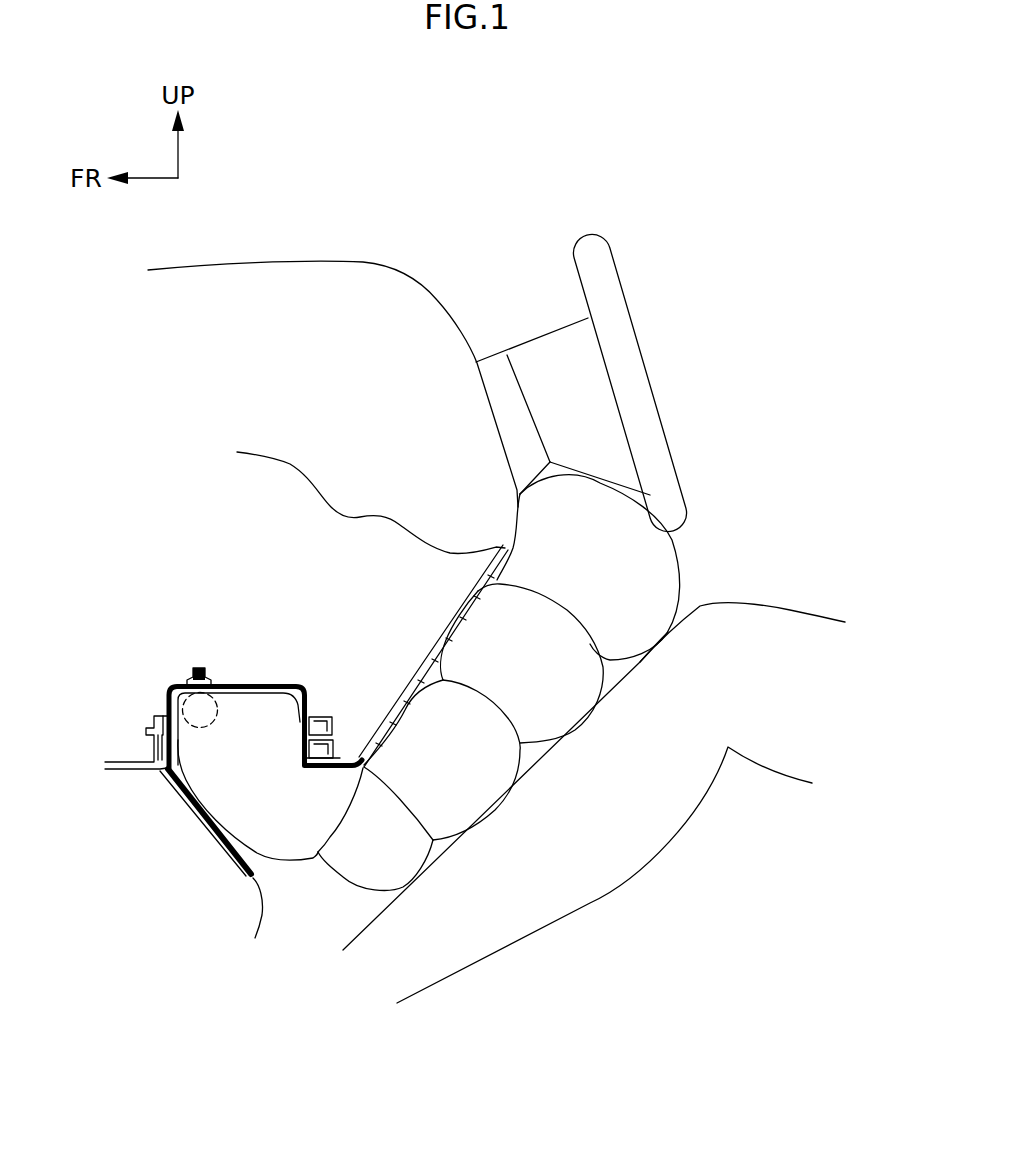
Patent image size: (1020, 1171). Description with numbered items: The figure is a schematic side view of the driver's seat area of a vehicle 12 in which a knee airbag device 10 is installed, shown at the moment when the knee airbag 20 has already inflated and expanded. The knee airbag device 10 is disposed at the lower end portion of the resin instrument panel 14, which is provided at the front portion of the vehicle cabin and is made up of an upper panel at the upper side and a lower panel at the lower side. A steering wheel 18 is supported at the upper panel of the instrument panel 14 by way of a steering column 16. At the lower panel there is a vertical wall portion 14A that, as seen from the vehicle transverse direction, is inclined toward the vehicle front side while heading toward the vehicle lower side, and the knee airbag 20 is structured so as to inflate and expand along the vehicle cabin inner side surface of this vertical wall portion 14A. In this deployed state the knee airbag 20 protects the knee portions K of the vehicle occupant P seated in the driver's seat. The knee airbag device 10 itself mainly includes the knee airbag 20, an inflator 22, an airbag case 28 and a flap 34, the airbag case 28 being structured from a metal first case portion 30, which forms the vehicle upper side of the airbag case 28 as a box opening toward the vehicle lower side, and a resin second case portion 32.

The knee airbag device 10 is at (172, 652).
The vehicle 12 is at (712, 235).
The instrument panel 14 is at (317, 257).
The vertical wall portion 14A is at (445, 634).
The steering column 16 is at (538, 340).
The steering wheel 18 is at (623, 300).
The knee airbag 20 is at (682, 577).
The inflator 22 is at (218, 713).
The airbag case 28 is at (234, 735).
The first case portion 30 is at (305, 683).
The second case portion 32 is at (203, 822).
The flap 34 is at (253, 910).
The knee portions K is at (662, 631).
The vehicle occupant P is at (787, 606).